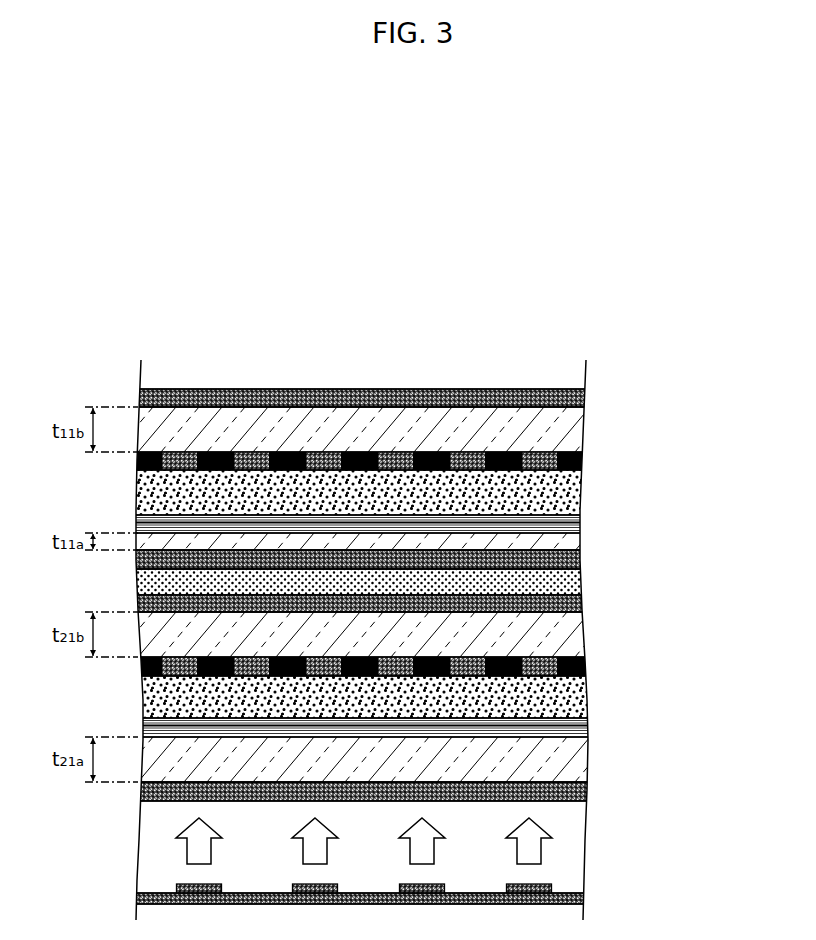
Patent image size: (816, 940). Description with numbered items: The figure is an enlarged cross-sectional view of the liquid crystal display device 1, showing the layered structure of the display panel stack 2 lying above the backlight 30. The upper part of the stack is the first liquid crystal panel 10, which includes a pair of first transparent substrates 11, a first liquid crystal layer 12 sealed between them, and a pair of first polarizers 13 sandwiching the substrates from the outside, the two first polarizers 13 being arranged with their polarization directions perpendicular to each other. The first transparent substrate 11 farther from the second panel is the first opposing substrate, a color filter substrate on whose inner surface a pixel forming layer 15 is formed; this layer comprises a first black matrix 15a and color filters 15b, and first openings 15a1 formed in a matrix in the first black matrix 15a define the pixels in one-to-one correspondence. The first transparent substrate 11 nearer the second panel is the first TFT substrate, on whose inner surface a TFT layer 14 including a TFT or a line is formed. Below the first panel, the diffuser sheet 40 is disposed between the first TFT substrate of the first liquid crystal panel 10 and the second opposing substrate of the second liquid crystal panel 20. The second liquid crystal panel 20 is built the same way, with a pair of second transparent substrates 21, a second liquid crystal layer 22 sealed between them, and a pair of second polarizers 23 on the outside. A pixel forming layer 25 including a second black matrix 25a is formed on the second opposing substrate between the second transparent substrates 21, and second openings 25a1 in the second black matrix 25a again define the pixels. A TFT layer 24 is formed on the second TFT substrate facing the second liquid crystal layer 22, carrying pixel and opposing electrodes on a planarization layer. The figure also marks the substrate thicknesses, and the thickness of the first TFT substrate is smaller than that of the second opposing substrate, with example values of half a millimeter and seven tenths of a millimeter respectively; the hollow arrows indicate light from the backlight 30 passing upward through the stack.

The liquid crystal display device 1 is at (645, 328).
The display panel stack 2 is at (743, 455).
The first liquid crystal panel 10 is at (695, 375).
The second liquid crystal panel 20 is at (695, 593).
The diffuser sheet 40 is at (580, 582).
The first polarizers 13 is at (576, 396).
The first transparent substrates 11 is at (574, 424).
The pixel forming layer 15 is at (370, 466).
The first black matrix 15a is at (562, 472).
The first openings 15a1 is at (195, 463).
The color filters 15b is at (543, 458).
The first liquid crystal layer 12 is at (577, 493).
The TFT layer 14 is at (578, 522).
The second polarizers 23 is at (580, 600).
The second transparent substrates 21 is at (580, 632).
The pixel forming layer 25 is at (346, 681).
The second black matrix 25a is at (567, 677).
The second openings 25a1 is at (195, 665).
The second liquid crystal layer 22 is at (583, 703).
The TFT layer 24 is at (585, 727).
The backlight 30 is at (560, 885).